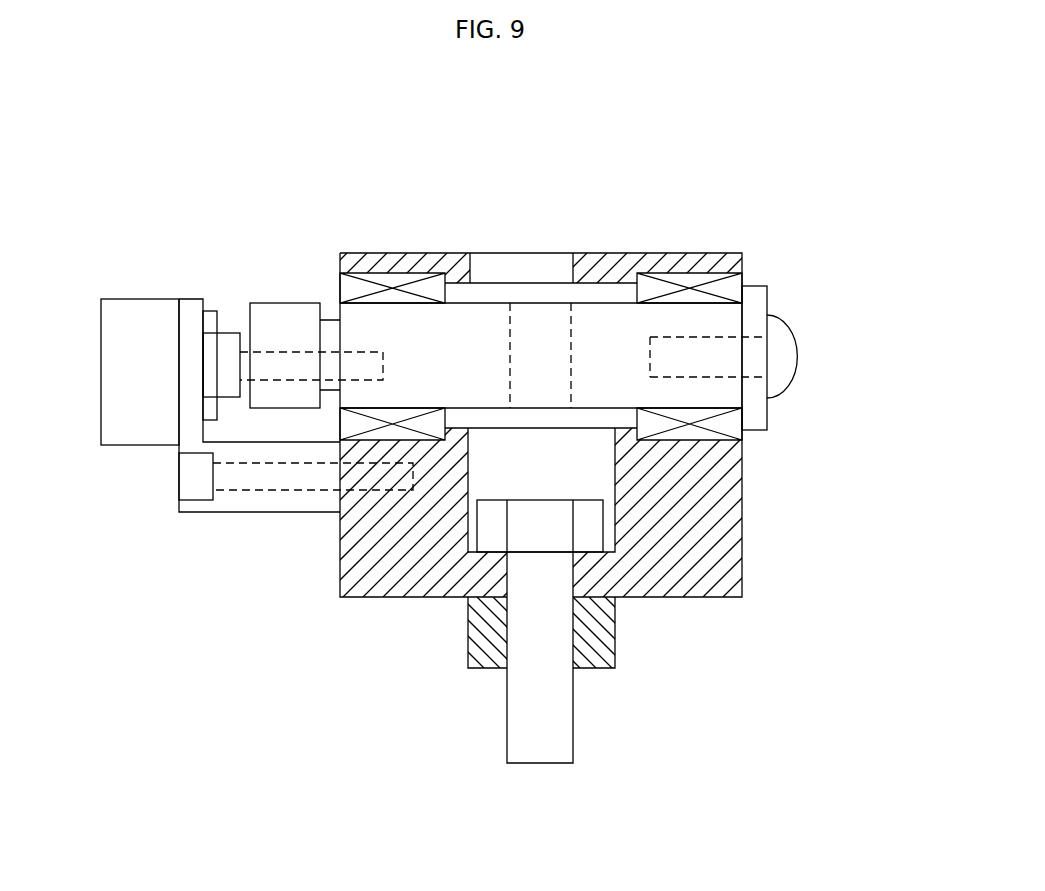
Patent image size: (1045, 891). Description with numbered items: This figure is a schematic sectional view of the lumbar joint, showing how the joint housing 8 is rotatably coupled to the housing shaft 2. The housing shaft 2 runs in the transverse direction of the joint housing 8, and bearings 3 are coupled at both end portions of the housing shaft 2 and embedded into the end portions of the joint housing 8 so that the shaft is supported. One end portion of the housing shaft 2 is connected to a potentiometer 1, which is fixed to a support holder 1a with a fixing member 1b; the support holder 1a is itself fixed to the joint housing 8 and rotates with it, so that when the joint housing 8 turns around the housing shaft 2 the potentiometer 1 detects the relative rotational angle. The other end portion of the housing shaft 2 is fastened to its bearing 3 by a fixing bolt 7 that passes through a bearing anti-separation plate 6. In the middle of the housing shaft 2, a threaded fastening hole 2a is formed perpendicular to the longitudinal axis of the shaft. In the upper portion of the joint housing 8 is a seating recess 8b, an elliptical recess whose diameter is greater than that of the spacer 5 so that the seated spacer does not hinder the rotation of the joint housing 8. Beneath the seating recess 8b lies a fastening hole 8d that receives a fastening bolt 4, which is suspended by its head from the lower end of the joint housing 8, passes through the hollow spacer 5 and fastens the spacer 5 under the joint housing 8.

The potentiometer 1 is at (137, 310).
The support holder 1a is at (253, 503).
The fixing member 1b is at (190, 479).
The housing shaft 2 is at (283, 306).
The threaded fastening hole 2a is at (552, 340).
The bearing 3 is at (384, 290).
The fastening bolt 4 is at (522, 727).
The spacer 5 is at (468, 642).
The bearing anti-separation plate 6 is at (763, 287).
The fixing bolt 7 is at (787, 355).
The joint housing 8 is at (673, 577).
The seating recess 8b is at (527, 265).
The fastening hole 8d is at (573, 468).